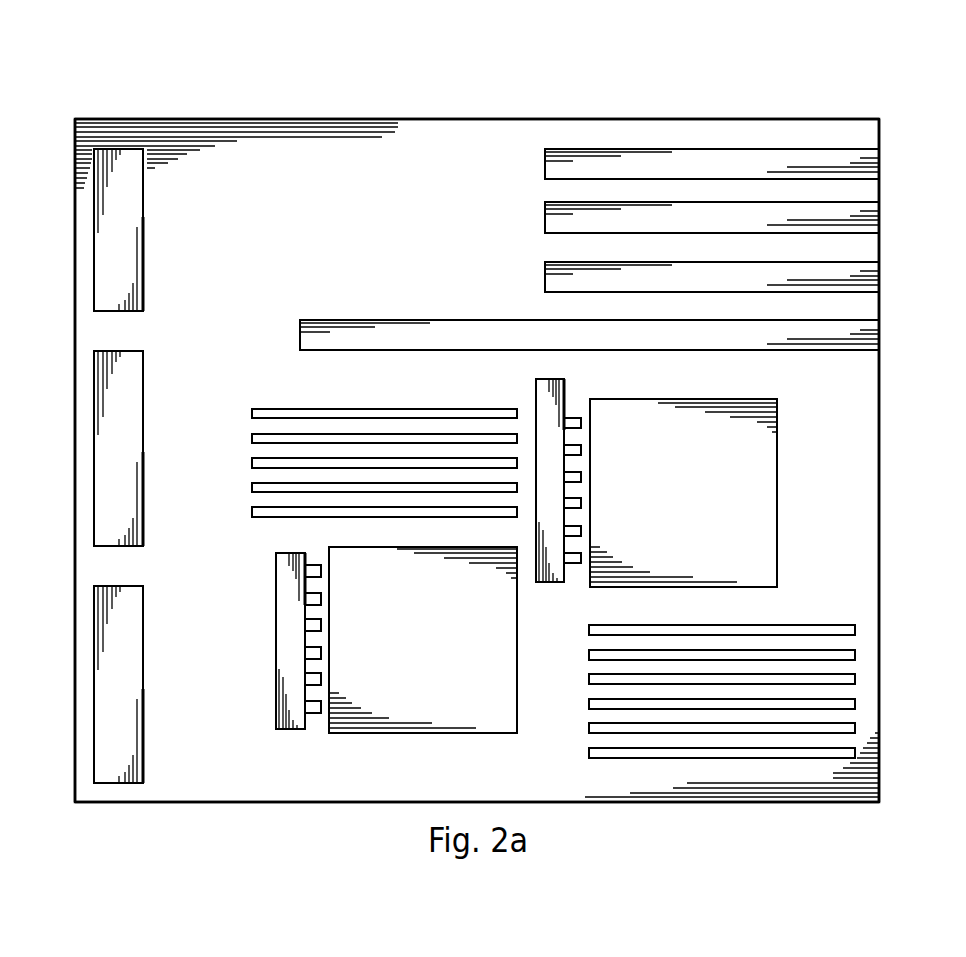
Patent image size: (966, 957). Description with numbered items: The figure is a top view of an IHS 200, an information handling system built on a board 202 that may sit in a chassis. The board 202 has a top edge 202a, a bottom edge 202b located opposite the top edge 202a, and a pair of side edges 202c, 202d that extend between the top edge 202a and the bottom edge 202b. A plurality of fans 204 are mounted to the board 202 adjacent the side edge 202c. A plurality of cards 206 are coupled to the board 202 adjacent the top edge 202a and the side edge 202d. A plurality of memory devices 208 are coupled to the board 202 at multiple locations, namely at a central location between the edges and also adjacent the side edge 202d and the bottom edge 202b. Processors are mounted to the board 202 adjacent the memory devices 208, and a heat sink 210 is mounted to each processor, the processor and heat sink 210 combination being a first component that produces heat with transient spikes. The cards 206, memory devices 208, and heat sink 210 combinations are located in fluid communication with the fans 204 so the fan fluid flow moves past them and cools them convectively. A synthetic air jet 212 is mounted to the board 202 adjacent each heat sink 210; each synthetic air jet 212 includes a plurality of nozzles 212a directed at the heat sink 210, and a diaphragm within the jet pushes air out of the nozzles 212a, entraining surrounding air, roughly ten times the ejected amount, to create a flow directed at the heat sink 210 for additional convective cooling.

The IHS 200 is at (148, 97).
The board 202 is at (362, 233).
The top edge 202a is at (480, 118).
The bottom edge 202b is at (312, 804).
The side edge 202c is at (75, 483).
The side edge 202d is at (880, 483).
The fans 204 is at (145, 231).
The cards 206 is at (545, 162).
The memory devices 208 is at (260, 408).
The heat sink 210 is at (700, 504).
The synthetic air jet 212 is at (532, 403).
The nozzles 212a is at (577, 421).